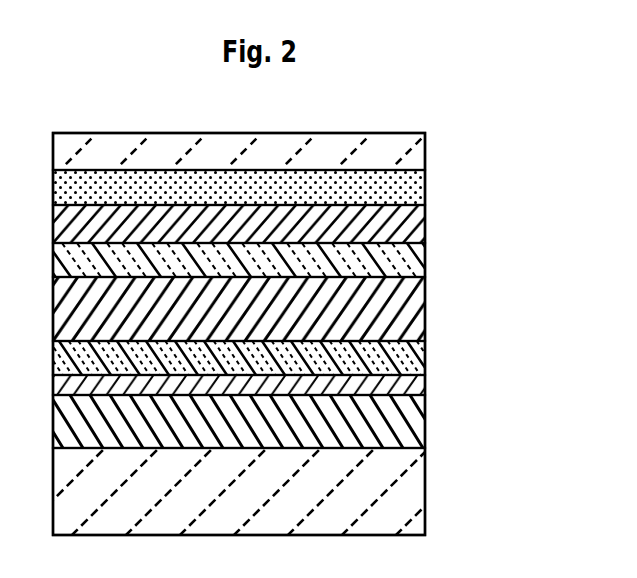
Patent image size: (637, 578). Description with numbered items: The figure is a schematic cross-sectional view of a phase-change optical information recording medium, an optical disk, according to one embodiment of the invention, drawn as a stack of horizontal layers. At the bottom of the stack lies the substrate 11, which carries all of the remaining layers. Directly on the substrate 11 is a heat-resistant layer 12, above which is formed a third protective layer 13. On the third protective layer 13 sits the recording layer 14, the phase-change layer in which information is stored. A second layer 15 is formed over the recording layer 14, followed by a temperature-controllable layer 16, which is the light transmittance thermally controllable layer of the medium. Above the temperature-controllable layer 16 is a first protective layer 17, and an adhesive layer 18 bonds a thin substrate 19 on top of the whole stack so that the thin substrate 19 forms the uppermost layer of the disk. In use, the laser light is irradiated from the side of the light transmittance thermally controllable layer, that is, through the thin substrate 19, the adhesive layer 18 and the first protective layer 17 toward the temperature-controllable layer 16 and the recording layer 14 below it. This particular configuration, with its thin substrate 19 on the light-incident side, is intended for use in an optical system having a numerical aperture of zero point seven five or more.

The substrate 11 is at (400, 495).
The heat-resistant layer 12 is at (400, 424).
The third protective layer 13 is at (400, 386).
The recording layer 14 is at (400, 362).
The second layer 15 is at (400, 317).
The temperature-controllable layer 16 is at (400, 262).
The first protective layer 17 is at (400, 226).
The adhesive layer 18 is at (405, 188).
The thin substrate 19 is at (405, 152).